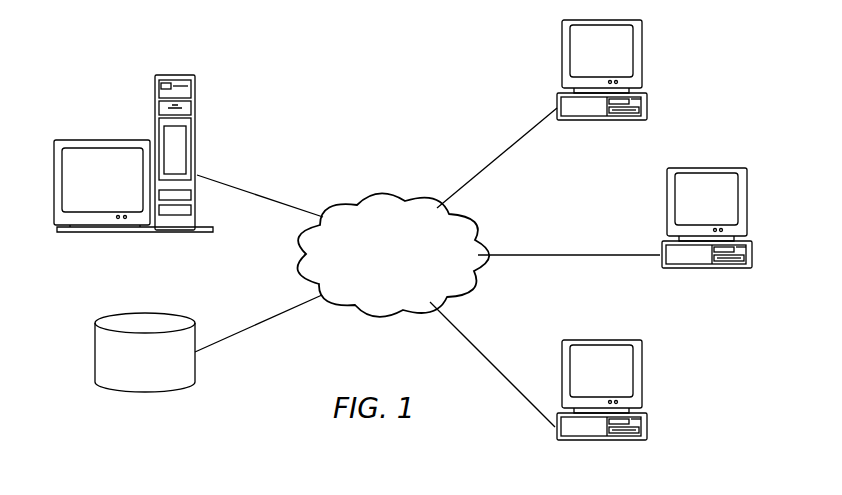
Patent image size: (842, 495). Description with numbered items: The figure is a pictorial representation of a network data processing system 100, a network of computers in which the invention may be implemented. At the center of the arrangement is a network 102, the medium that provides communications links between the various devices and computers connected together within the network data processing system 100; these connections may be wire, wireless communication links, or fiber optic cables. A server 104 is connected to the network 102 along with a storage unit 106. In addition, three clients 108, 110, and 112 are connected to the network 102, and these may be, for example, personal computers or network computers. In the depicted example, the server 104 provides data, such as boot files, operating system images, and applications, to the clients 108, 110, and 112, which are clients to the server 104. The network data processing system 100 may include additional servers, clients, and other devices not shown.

The network data processing system 100 is at (276, 57).
The network 102 is at (408, 281).
The server 104 is at (155, 100).
The storage unit 106 is at (95, 352).
The client 108 is at (642, 62).
The client 110 is at (745, 205).
The client 112 is at (640, 378).